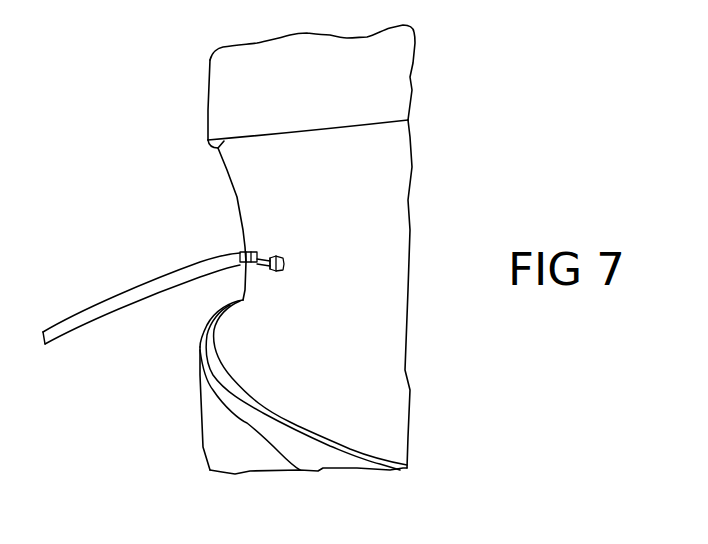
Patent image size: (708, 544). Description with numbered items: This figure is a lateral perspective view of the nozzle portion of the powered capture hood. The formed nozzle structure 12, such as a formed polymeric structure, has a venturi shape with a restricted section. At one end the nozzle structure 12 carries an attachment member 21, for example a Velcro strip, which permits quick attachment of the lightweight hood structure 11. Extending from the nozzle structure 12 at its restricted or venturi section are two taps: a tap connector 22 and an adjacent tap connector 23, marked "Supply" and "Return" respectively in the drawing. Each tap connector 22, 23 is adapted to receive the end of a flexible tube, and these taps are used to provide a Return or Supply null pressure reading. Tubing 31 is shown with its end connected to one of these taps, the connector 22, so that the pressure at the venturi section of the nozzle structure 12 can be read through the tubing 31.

The lightweight hood structure 11 is at (203, 447).
The formed nozzle structure 12 is at (412, 177).
The attachment member 21 is at (327, 458).
The tap connector 22 is at (240, 248).
The tap connector 23 is at (283, 255).
The tubing 31 is at (135, 295).